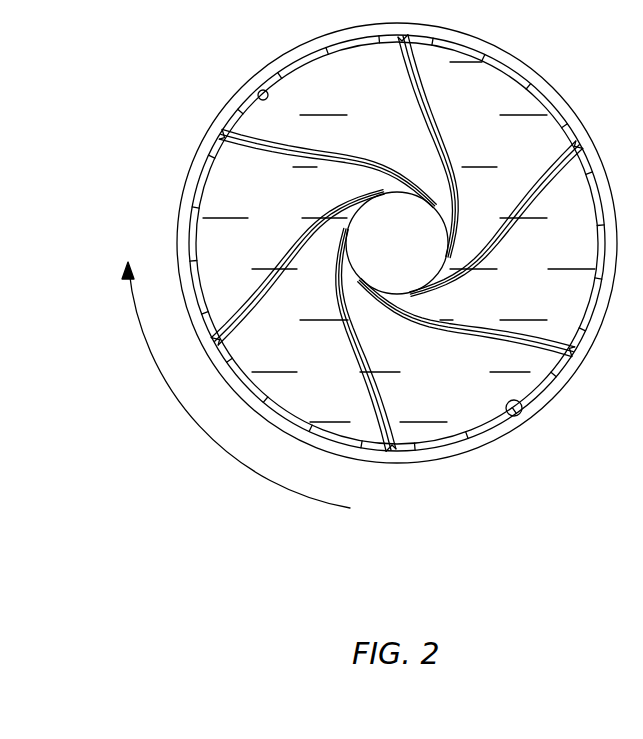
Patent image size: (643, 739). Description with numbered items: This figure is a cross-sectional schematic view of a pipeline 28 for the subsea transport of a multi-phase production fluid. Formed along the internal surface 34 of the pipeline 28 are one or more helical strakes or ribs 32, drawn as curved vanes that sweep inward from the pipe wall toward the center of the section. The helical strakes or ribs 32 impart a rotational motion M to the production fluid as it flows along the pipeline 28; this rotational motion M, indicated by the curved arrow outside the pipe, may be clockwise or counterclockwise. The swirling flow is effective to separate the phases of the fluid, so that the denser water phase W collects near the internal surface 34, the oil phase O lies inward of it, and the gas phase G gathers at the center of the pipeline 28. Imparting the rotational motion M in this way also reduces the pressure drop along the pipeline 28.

The pipeline 28 is at (580, 118).
The helical strakes or ribs 32 is at (216, 145).
The internal surface 34 is at (522, 406).
The water phase W is at (258, 92).
The oil phase O is at (364, 99).
The gas phase G is at (407, 254).
The rotational motion M is at (234, 371).